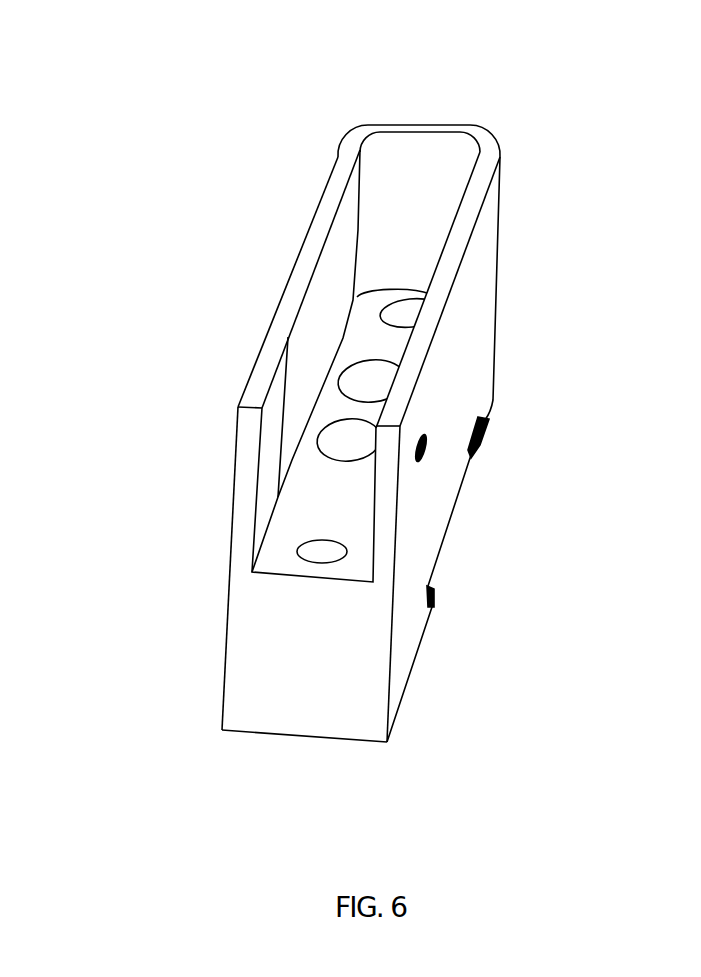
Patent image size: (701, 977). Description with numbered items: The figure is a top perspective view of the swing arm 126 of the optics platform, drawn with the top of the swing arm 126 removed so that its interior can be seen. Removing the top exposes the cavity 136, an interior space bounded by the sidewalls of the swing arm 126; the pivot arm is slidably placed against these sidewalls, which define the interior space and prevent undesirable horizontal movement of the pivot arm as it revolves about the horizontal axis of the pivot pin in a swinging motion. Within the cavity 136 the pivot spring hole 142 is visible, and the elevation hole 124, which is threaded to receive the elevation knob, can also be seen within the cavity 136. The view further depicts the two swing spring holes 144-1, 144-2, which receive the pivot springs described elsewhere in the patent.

The swing arm 126 is at (128, 75).
The cavity 136 is at (431, 146).
The pivot spring hole 142 is at (382, 311).
The swing spring hole 144-1 is at (338, 377).
The swing spring hole 144-2 is at (320, 424).
The elevation hole 124 is at (297, 553).